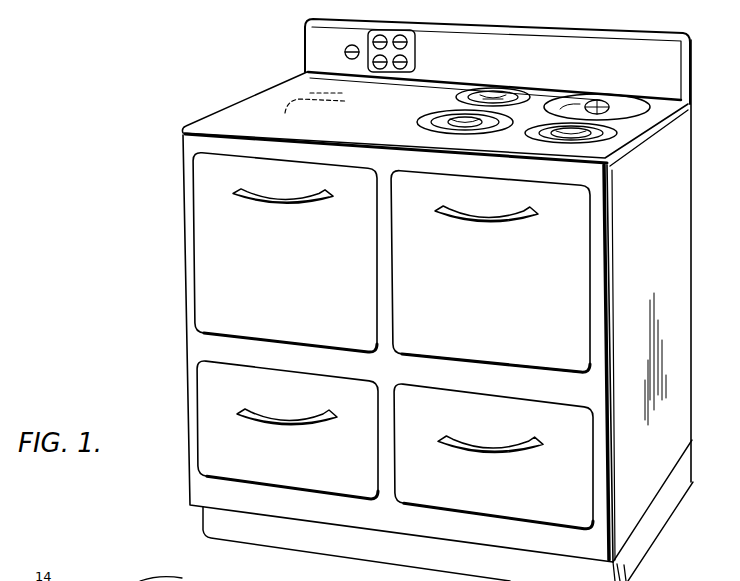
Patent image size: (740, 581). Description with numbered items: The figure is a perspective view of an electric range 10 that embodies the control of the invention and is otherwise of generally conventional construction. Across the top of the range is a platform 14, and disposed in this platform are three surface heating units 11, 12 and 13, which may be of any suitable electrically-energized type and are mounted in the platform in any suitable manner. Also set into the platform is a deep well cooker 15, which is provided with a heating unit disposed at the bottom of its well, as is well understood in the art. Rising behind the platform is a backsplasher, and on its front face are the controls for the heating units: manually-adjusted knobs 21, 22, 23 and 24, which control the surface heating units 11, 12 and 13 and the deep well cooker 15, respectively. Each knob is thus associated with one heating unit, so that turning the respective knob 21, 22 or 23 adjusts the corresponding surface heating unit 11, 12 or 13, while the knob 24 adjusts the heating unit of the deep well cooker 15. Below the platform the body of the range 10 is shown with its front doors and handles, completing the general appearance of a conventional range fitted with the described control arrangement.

The electric range 10 is at (166, 259).
The surface heating unit 11 is at (413, 120).
The surface heating unit 12 is at (600, 133).
The surface heating unit 13 is at (457, 97).
The platform 14 is at (228, 117).
The deep well cooker 15 is at (622, 108).
The manually-adjusted knob 21 is at (377, 70).
The manually-adjusted knob 22 is at (410, 66).
The manually-adjusted knob 23 is at (371, 39).
The manually-adjusted knob 24 is at (410, 42).